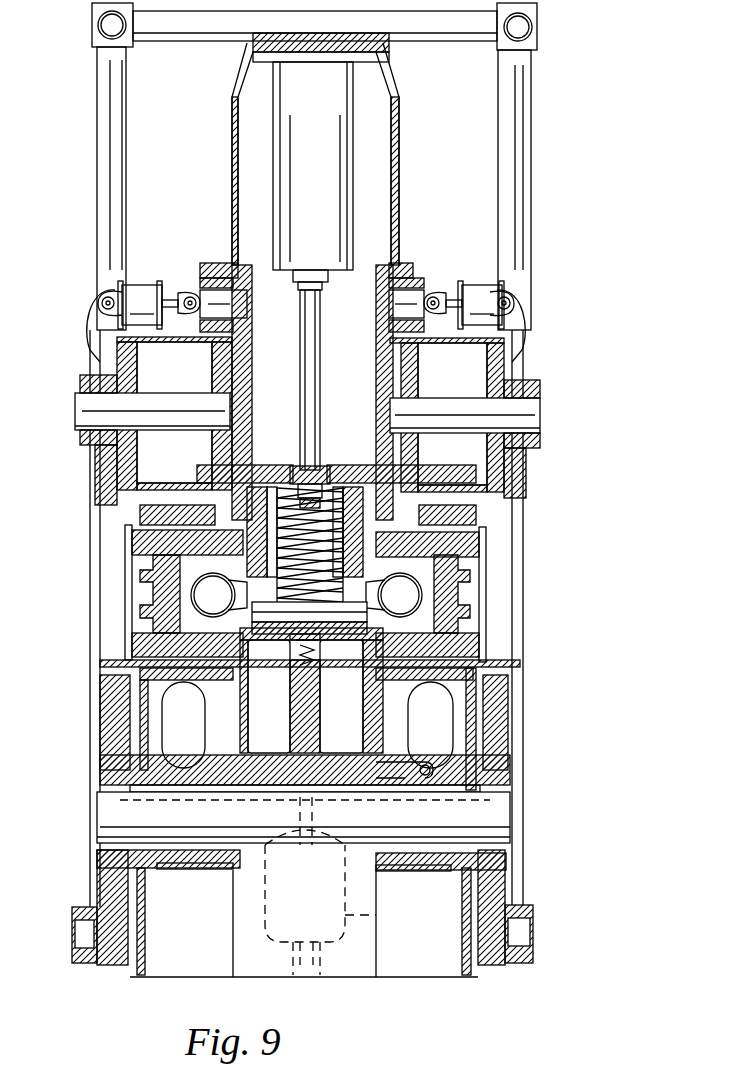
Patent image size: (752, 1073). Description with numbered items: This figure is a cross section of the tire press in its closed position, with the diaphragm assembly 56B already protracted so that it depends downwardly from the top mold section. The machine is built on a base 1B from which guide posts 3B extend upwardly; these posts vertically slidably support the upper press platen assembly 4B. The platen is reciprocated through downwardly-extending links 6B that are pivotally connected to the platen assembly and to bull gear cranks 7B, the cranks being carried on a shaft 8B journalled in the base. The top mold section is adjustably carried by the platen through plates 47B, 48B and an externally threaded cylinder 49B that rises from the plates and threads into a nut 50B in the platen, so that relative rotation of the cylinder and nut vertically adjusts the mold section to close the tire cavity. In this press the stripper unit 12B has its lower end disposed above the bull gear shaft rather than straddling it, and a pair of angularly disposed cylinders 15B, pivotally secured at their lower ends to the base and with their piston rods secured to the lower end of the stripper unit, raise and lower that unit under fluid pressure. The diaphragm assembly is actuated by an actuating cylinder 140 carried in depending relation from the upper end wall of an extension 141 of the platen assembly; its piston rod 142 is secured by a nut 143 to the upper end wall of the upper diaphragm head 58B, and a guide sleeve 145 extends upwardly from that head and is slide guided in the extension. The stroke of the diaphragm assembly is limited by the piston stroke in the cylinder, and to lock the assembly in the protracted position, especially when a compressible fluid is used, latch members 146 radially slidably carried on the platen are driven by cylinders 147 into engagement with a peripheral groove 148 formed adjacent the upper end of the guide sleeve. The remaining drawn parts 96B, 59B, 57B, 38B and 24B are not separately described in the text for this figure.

The guide posts 3B is at (100, 205).
The extension of the platen assembly 141 is at (396, 148).
The actuating cylinder 140 is at (340, 205).
The piston rod 142 is at (310, 410).
The nut 143 is at (300, 470).
The cylinders 147 is at (140, 278).
The latch members 146 is at (208, 272).
The peripheral groove 148 is at (247, 303).
The guide sleeve 145 is at (376, 348).
The upper press platen assembly 4B is at (499, 370).
The nut 50B is at (397, 423).
The externally threaded cylinder 49B is at (396, 462).
The plate 48B is at (476, 512).
The plate 47B is at (476, 526).
The plate 96B is at (130, 540).
The diaphragm assembly 56B is at (480, 545).
The block 59B is at (140, 613).
The upper diaphragm head 58B is at (252, 592).
The bearing 57B is at (352, 604).
The spring 38B is at (290, 657).
The links 6B is at (93, 628).
The bull gear cranks 7B is at (110, 718).
The base 1B is at (470, 725).
The opening 24B is at (326, 696).
The stripper unit 12B is at (258, 766).
The bull gear shaft 8B is at (490, 830).
The cylinders 15B is at (378, 914).